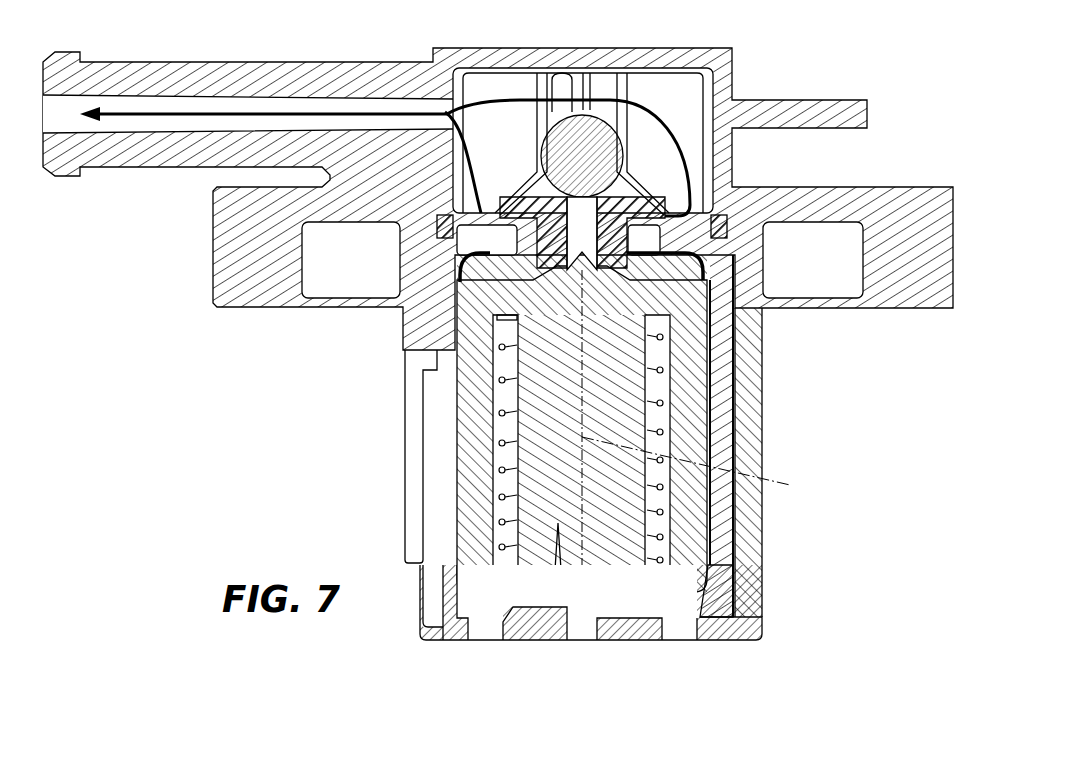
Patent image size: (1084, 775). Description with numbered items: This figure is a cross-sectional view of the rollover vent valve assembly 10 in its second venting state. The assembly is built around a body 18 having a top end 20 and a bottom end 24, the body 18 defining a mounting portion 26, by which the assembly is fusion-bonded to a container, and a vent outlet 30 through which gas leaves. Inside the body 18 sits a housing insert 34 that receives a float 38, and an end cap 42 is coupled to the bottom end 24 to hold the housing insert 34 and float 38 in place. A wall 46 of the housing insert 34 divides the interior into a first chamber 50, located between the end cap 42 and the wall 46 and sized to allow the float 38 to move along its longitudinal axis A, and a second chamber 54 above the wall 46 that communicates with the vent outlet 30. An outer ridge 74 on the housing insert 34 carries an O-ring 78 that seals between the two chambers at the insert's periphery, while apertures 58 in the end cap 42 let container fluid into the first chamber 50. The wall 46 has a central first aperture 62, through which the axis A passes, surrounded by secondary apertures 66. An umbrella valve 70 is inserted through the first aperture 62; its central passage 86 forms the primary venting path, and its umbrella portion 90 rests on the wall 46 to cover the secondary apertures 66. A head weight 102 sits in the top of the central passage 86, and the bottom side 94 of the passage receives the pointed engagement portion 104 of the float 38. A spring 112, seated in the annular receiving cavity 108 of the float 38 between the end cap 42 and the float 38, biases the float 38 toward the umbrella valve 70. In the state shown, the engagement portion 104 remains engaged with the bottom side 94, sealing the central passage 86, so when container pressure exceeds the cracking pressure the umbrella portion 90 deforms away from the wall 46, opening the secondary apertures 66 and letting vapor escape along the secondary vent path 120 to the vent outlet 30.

The rollover vent valve assembly 10 is at (893, 68).
The body 18 is at (473, 57).
The top end 20 is at (542, 47).
The bottom end 24 is at (437, 605).
The mounting portion 26 is at (938, 190).
The vent outlet 30 is at (140, 77).
The housing insert 34 is at (735, 430).
The float 38 is at (690, 500).
The end cap 42 is at (745, 630).
The wall 46 is at (715, 240).
The first chamber 50 is at (672, 240).
The second chamber 54 is at (708, 142).
The apertures 58 is at (585, 628).
The first aperture 62 is at (613, 285).
The secondary apertures 66 is at (493, 267).
The umbrella valve 70 is at (663, 188).
The outer ridge 74 is at (470, 262).
The O-ring 78 is at (440, 232).
The central passage 86 is at (712, 270).
The umbrella portion 90 is at (453, 192).
The bottom side 94 is at (700, 340).
The head weight 102 is at (600, 140).
The engagement portion 104 is at (573, 277).
The annular receiving cavity 108 is at (513, 485).
The spring 112 is at (660, 548).
The secondary vent path 120 is at (287, 110).
The longitudinal axis A is at (695, 470).